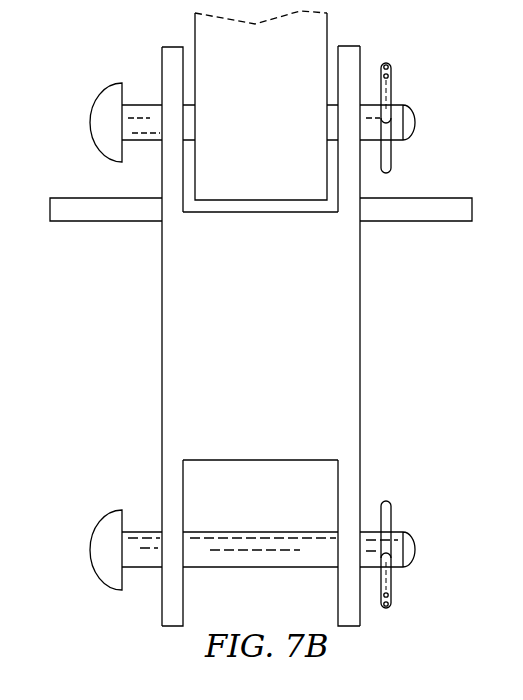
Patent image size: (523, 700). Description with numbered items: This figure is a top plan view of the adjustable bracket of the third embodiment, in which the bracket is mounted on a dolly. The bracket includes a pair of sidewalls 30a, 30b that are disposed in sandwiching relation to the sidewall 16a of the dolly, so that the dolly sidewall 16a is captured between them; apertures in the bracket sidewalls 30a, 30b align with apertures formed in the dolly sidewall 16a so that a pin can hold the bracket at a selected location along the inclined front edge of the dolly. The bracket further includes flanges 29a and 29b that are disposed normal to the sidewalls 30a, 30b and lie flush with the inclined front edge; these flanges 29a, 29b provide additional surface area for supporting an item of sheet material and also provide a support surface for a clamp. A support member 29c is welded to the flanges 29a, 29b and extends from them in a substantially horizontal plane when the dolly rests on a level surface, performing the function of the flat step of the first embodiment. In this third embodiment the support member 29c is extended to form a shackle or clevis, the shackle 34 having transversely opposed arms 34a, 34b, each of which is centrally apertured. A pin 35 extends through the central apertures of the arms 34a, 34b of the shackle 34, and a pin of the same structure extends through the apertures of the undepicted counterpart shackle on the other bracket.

The sidewall of the dolly 16a is at (272, 134).
The flange 29a is at (95, 222).
The flange 29b is at (426, 221).
The support member 29c is at (282, 331).
The sidewall 30a is at (162, 57).
The sidewall 30b is at (360, 58).
The shackle 34 is at (362, 400).
The arm 34a is at (162, 598).
The arm 34b is at (360, 614).
The pin 35 is at (296, 567).